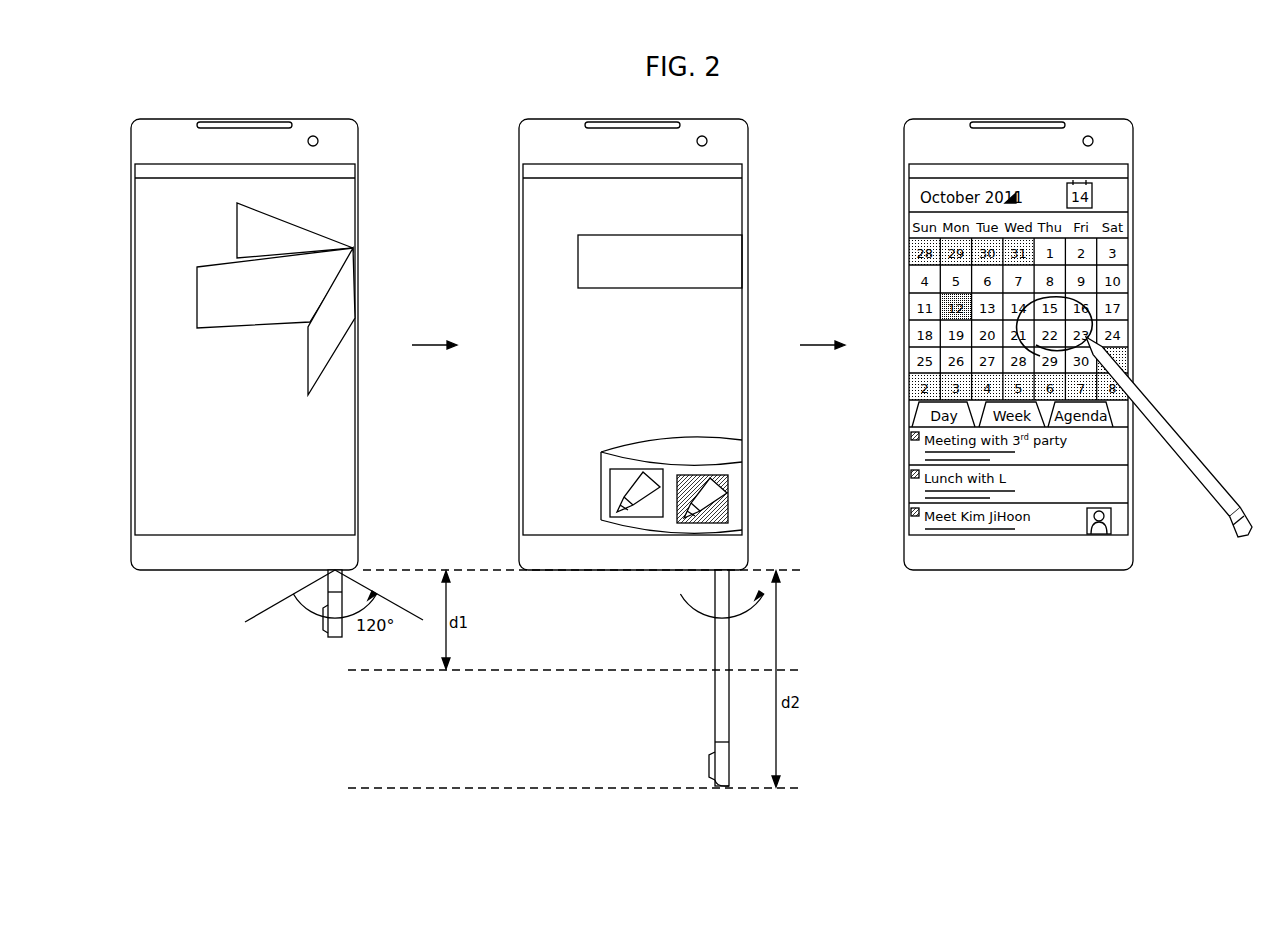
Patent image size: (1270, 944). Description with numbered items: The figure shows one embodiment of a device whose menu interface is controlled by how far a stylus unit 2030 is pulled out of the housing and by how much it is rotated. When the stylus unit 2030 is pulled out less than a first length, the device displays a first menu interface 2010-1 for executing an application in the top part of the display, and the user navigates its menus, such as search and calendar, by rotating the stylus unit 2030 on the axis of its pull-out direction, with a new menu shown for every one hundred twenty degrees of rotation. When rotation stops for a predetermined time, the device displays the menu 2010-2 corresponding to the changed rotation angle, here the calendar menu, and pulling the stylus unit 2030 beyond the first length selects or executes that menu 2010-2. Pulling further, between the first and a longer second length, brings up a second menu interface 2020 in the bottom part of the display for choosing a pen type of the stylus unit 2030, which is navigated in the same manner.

The first menu interface 2010-1 is at (348, 283).
The menu 2010-2 is at (737, 257).
The second menu interface 2020 is at (737, 497).
The stylus unit 2030 is at (332, 636).